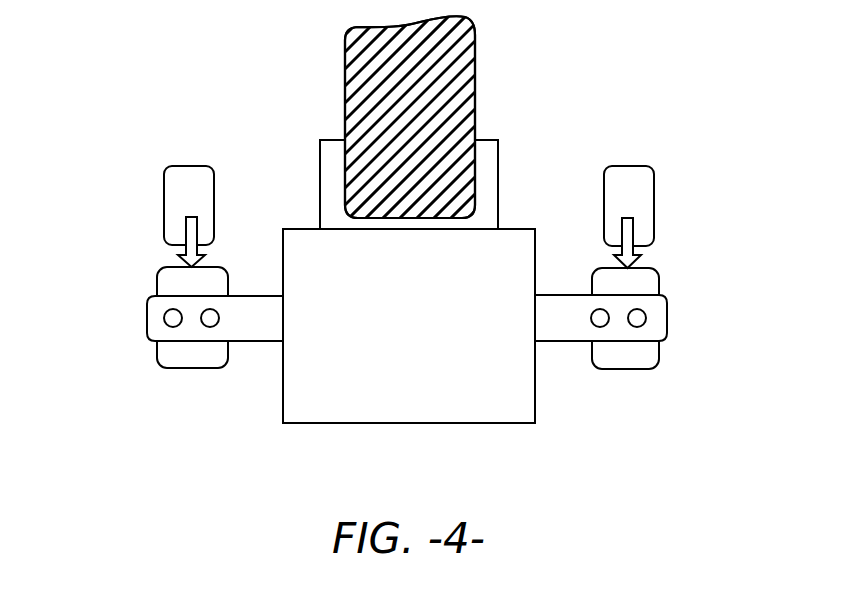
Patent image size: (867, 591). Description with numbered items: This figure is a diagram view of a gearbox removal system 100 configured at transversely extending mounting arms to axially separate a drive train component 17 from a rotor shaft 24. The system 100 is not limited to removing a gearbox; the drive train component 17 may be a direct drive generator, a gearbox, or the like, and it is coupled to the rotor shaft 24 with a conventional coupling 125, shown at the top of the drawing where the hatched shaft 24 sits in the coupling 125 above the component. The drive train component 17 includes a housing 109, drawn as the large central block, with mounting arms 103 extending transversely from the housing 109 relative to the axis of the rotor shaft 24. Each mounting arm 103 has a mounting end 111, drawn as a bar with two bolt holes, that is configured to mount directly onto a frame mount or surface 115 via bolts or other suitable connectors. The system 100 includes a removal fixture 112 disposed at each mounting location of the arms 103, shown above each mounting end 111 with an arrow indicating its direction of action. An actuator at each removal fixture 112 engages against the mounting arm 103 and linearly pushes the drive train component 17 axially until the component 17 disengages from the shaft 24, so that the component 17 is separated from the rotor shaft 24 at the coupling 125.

The rotor shaft 24 is at (477, 93).
The conventional coupling 125 is at (318, 189).
The housing 109 is at (423, 330).
The frame mount or surface 115 is at (157, 358).
The mounting end 111 is at (147, 320).
The removal fixture 112 is at (164, 200).
The mounting arm 103 is at (273, 293).
The gearbox removal system 100 is at (673, 203).
The drive train component 17 is at (497, 424).